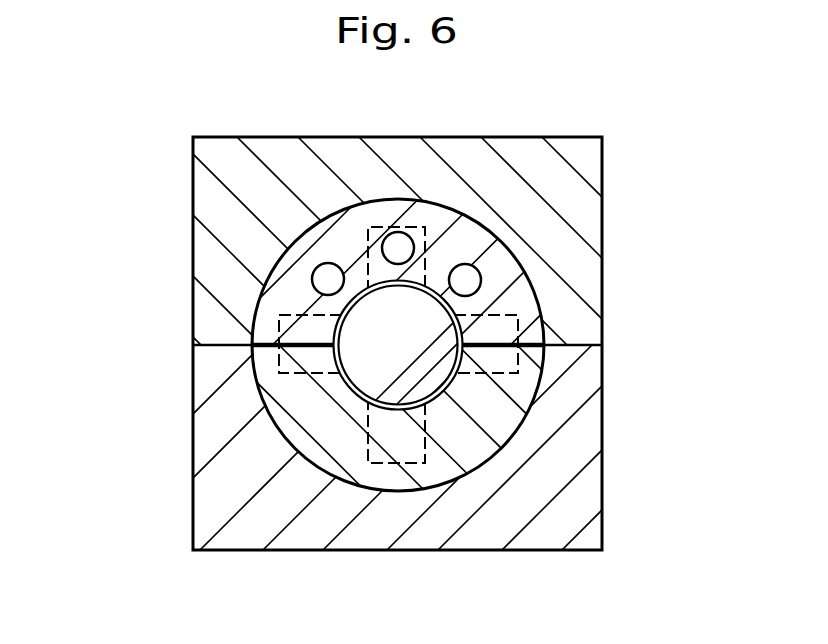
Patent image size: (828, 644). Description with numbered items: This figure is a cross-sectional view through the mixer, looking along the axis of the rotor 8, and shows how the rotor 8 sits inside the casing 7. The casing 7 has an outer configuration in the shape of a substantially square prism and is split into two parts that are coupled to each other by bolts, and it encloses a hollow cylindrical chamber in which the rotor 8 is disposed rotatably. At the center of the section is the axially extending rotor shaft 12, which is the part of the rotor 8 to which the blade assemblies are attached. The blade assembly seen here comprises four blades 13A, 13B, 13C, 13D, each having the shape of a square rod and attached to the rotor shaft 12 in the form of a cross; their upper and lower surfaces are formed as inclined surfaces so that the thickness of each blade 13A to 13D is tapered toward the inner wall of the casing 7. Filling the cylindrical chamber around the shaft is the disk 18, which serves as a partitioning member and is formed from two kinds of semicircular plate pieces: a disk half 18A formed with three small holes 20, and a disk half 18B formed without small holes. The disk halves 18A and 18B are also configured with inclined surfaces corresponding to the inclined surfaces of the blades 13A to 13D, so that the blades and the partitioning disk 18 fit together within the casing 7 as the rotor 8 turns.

The casing 7 is at (603, 249).
The rotor 8 is at (419, 375).
The rotor shaft 12 is at (362, 400).
The blade 13A is at (423, 227).
The blade 13B is at (543, 373).
The blade 13C is at (385, 462).
The blade 13D is at (277, 362).
The disk 18 is at (95, 298).
The disk half 18A is at (254, 313).
The disk half 18B is at (252, 358).
The small hole 20 is at (332, 263).